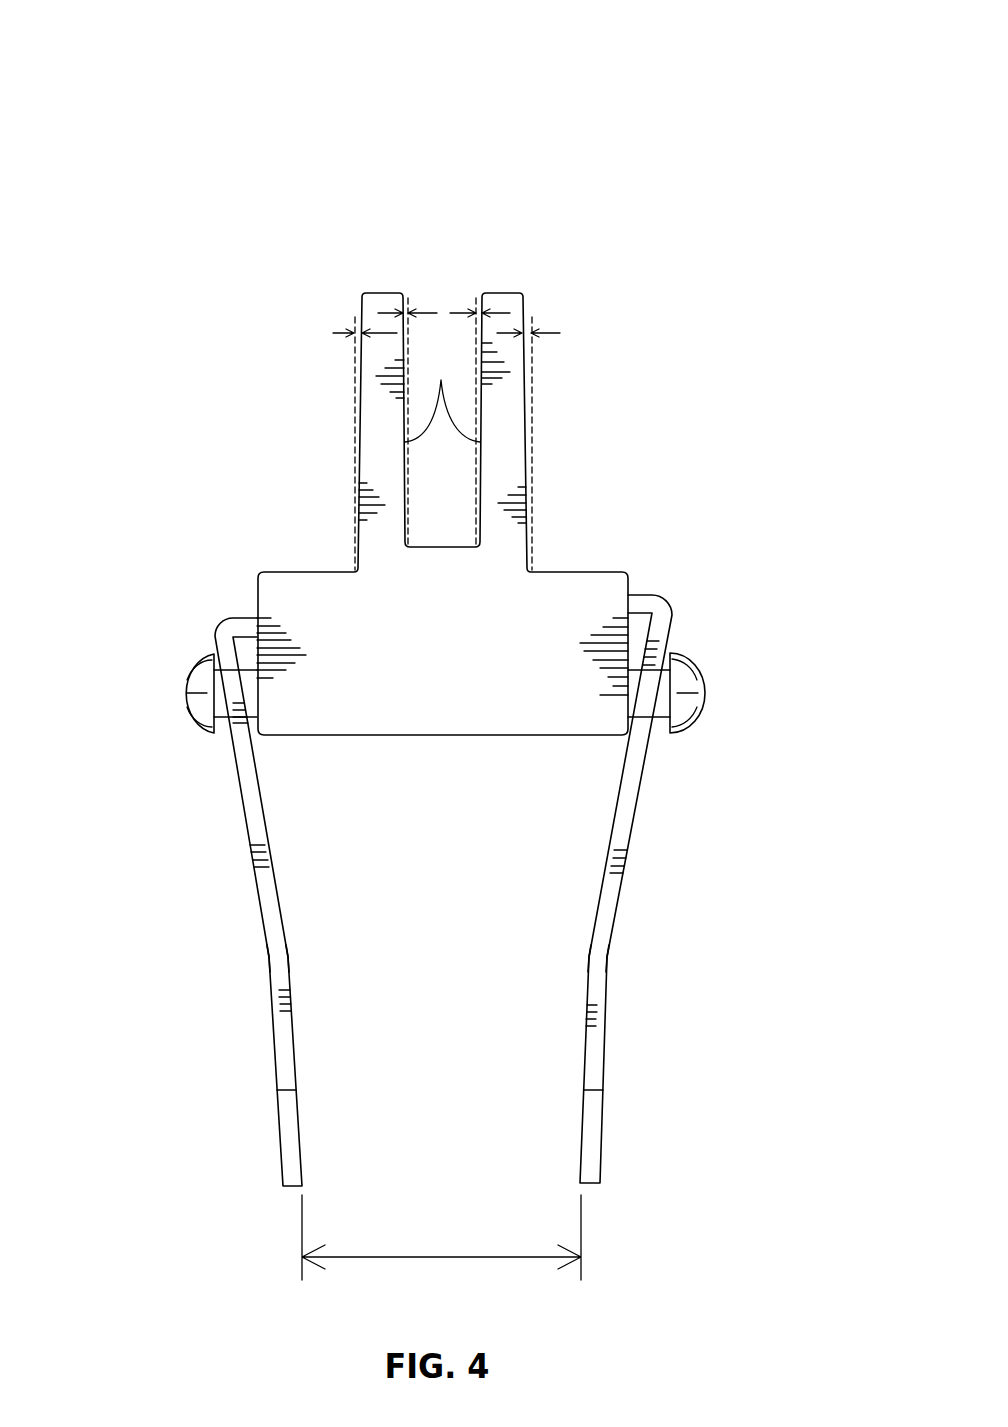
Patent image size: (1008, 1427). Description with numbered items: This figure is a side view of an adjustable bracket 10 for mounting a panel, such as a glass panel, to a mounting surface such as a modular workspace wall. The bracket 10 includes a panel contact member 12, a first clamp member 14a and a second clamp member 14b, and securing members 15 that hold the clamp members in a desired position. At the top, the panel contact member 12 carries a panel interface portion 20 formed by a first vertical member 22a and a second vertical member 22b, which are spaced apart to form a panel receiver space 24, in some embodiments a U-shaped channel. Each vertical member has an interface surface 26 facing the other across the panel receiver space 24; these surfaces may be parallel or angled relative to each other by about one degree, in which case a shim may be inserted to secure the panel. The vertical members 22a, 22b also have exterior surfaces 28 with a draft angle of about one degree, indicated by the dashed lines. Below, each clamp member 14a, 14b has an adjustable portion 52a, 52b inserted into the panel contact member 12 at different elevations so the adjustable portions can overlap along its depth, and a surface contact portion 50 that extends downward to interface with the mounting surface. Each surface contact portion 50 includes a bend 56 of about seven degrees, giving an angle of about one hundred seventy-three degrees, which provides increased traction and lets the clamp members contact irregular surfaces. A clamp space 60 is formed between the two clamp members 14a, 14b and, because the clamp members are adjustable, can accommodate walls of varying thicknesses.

The adjustable bracket 10 is at (327, 142).
The panel contact member 12 is at (767, 347).
The first clamp member 14a is at (195, 933).
The second clamp member 14b is at (737, 972).
The securing member 15 is at (177, 670).
The panel interface portion 20 is at (588, 312).
The first vertical member 22a is at (383, 293).
The second vertical member 22b is at (503, 293).
The panel receiver space 24 is at (442, 305).
The interface surface 26 is at (442, 391).
The exterior surface 28 is at (358, 412).
The surface contact portion 50 is at (273, 1057).
The adjustable portion of first clamp member 52a is at (237, 618).
The adjustable portion of second clamp member 52b is at (647, 595).
The bend 56 is at (288, 957).
The clamp space 60 is at (442, 1257).